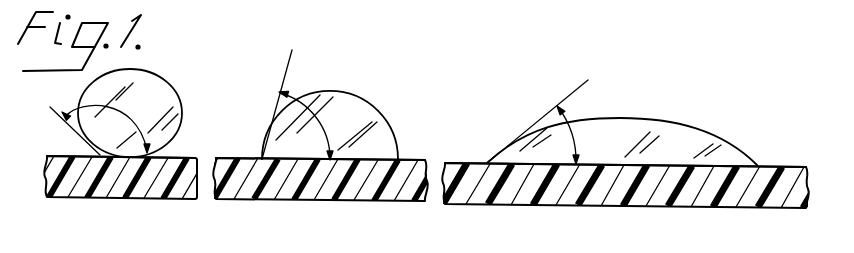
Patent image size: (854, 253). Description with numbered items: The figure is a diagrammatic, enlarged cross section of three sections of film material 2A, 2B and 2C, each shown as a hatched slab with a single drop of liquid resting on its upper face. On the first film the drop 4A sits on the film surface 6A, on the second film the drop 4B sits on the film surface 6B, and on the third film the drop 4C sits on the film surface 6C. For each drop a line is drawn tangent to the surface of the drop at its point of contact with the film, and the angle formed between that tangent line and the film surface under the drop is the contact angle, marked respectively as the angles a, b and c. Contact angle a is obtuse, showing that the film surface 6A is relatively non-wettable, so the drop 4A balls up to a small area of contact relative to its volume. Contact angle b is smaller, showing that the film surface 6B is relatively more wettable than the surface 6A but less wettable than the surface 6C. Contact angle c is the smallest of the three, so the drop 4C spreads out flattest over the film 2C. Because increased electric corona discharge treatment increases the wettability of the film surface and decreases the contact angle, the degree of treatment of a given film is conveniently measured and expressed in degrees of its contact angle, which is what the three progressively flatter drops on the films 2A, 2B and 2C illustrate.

The section of film material 2A is at (123, 187).
The section of film material 2B is at (317, 185).
The section of film material 2C is at (600, 188).
The drop of liquid 4A is at (150, 79).
The drop of liquid 4B is at (318, 95).
The drop of liquid 4C is at (662, 125).
The film surface 6A is at (173, 157).
The film surface 6B is at (400, 161).
The film surface 6C is at (767, 166).
The contact angle a is at (115, 106).
The contact angle b is at (320, 120).
The contact angle c is at (575, 136).